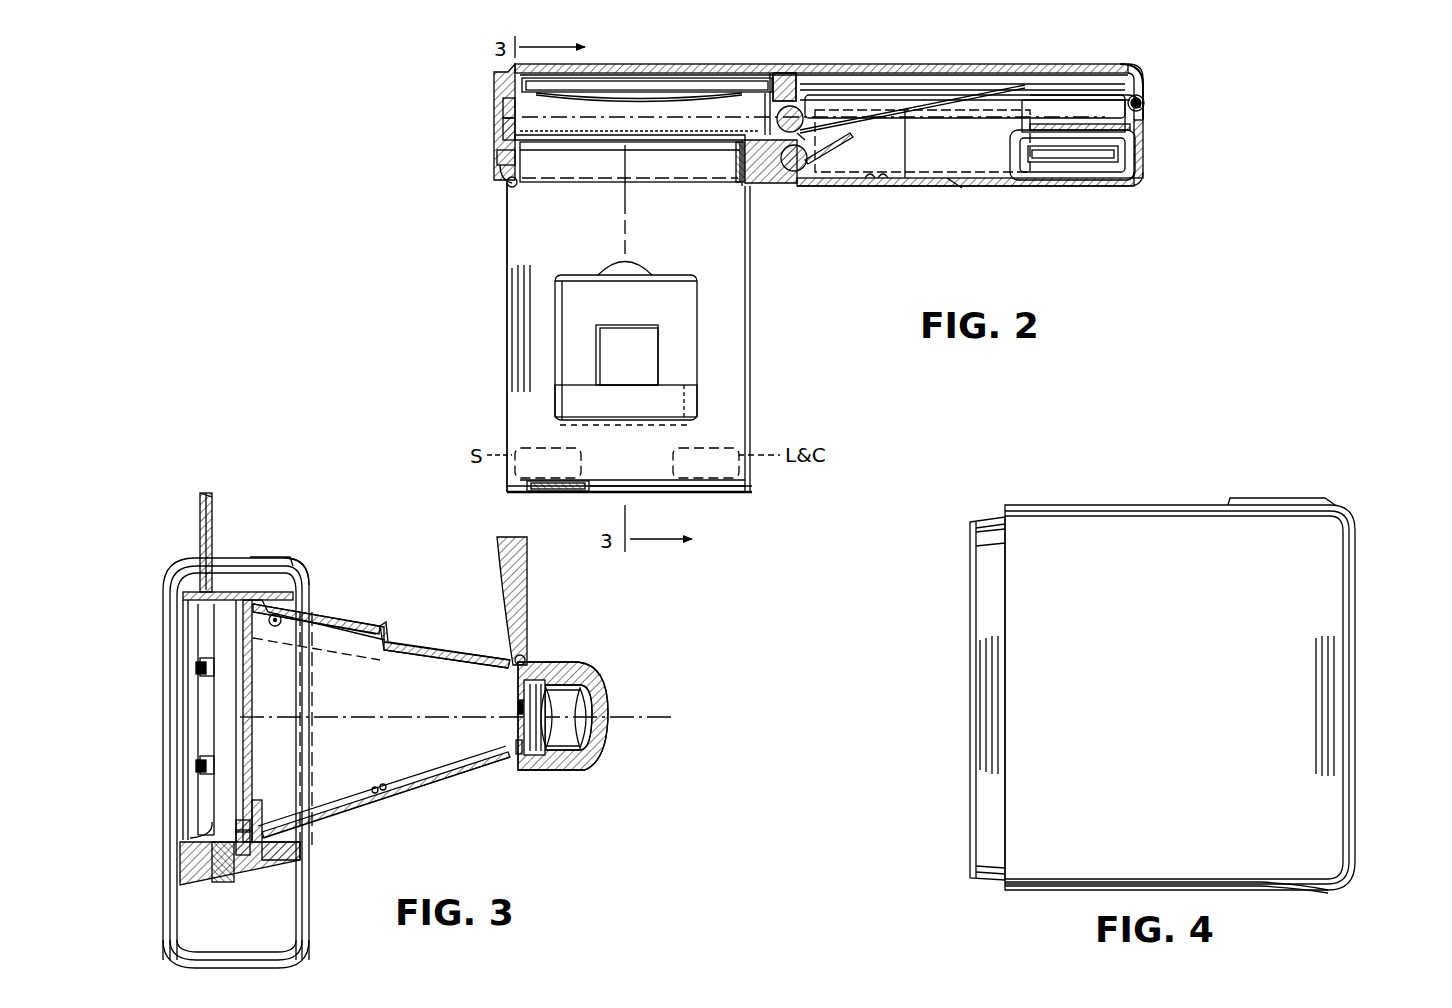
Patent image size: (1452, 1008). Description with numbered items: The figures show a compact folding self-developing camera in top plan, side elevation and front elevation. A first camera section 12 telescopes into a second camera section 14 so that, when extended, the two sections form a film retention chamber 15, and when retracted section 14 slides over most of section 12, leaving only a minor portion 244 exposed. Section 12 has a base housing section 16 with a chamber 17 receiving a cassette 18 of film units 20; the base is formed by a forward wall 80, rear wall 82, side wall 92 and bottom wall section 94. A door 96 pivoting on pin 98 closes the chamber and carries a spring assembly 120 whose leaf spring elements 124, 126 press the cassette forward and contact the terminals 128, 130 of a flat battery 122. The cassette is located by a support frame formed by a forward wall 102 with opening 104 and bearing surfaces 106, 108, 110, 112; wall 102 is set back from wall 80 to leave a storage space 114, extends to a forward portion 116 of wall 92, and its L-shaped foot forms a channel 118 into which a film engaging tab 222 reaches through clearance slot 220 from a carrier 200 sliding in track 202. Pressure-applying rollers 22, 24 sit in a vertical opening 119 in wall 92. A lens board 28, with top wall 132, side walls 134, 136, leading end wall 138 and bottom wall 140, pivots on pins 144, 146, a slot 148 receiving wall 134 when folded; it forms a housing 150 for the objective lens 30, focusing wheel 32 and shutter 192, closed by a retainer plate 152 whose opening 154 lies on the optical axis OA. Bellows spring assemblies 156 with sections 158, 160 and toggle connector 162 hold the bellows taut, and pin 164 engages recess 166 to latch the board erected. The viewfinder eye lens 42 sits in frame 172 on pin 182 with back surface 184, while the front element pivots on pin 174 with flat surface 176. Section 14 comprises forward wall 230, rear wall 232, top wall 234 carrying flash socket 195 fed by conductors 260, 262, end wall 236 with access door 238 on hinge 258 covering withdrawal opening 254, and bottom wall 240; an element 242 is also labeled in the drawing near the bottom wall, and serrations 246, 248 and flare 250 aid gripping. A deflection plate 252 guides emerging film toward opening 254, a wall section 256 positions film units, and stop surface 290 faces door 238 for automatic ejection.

In FIG. 2, the first camera section 12 is at (490, 233).
In FIG. 2, the second camera section 14 is at (952, 190).
In FIG. 2, the film retention and/or imbibition chamber 15 is at (942, 186).
In FIG. 2, the base housing section 16 is at (493, 74).
In FIG. 2, the chamber 17 is at (522, 98).
In FIG. 3, the chamber 17 is at (195, 598).
In FIG. 3, the cassette 18 is at (220, 690).
In FIG. 2, the self-developing film units 20 is at (1052, 72).
In FIG. 2, the pressure-applying roller 22 is at (800, 108).
In FIG. 2, the pressure-applying roller 24 is at (788, 172).
In FIG. 2, the lens board 28 is at (752, 492).
In FIG. 3, the objective lens 30 is at (568, 732).
In FIG. 2, the lens focusing wheel 32 is at (552, 492).
In FIG. 3, the rear or eye lens 42 is at (212, 520).
In FIG. 2, the forward wall 80 is at (873, 182).
In FIG. 2, the rear wall 82 is at (848, 70).
In FIG. 2, the side wall 92 is at (795, 72).
In FIG. 3, the side wall 92 is at (278, 918).
In FIG. 3, the bottom wall section 94 is at (180, 870).
In FIG. 2, the door 96 is at (717, 73).
In FIG. 2, the pin 98 is at (782, 72).
In FIG. 2, the forward wall 102 is at (728, 140).
In FIG. 2, the opening 104 is at (640, 135).
In FIG. 3, the portion of upper interior surface of bottom wall 106 is at (196, 832).
In FIG. 2, the interior surface portion of fixed side wall 108 is at (505, 108).
In FIG. 3, the underside surface portion of top wall 110 is at (236, 615).
In FIG. 2, the interior surface portion of side wall 112 is at (753, 110).
In FIG. 2, the space 114 is at (500, 163).
In FIG. 2, the forward portion of side wall 116 is at (765, 186).
In FIG. 3, the light sealed lateral channel 118 is at (262, 798).
In FIG. 2, the vertical opening 119 is at (808, 162).
In FIG. 2, the spring assembly 120 is at (580, 78).
In FIG. 2, the battery 122 is at (676, 92).
In FIG. 3, the leaf spring element 124 is at (206, 660).
In FIG. 3, the leaf spring element 126 is at (206, 758).
In FIG. 3, the battery terminal 128 is at (196, 668).
In FIG. 3, the battery terminal 130 is at (196, 766).
In FIG. 2, the top wall 132 is at (530, 247).
In FIG. 3, the top wall 132 is at (372, 630).
In FIG. 2, the left side wall 134 is at (506, 420).
In FIG. 2, the right side wall 136 is at (750, 342).
In FIG. 3, the right side wall 136 is at (340, 620).
In FIG. 2, the leading end wall 138 is at (700, 497).
In FIG. 3, the leading end wall 138 is at (608, 690).
In FIG. 3, the bottom wall 140 is at (540, 771).
In FIG. 2, the pivot pin 144 is at (518, 150).
In FIG. 2, the pivot pin 146 is at (740, 172).
In FIG. 2, the elongated vertical slot 148 is at (500, 122).
In FIG. 3, the component mounting housing 150 is at (578, 773).
In FIG. 3, the forward bellows retainer plate 152 is at (514, 748).
In FIG. 3, the central opening 154 is at (516, 708).
In FIG. 3, the folding leaf spring assemblies 156 is at (404, 792).
In FIG. 3, the forward section 158 is at (420, 778).
In FIG. 3, the rear section 160 is at (362, 800).
In FIG. 3, the over center pivoting toggle connector 162 is at (379, 703).
In FIG. 2, the pin 164 is at (500, 175).
In FIG. 2, the pin receiving recess 166 is at (508, 186).
In FIG. 3, the retaining frame 172 is at (202, 495).
In FIG. 3, the pivot pin 174 is at (525, 655).
In FIG. 3, the forward flat surface 176 is at (528, 568).
In FIG. 3, the pin 182 is at (222, 594).
In FIG. 3, the back surface 184 is at (200, 522).
In FIG. 3, the electronically operated shutter 192 is at (546, 676).
In FIG. 2, the flash unit socket 195 is at (1090, 168).
In FIG. 3, the sliding component carrier 200 is at (210, 838).
In FIG. 3, the guiding slide track 202 is at (212, 850).
In FIG. 3, the clearance slot 220 is at (285, 842).
In FIG. 3, the film engaging tab 222 is at (240, 820).
In FIG. 2, the forward wall 230 is at (968, 188).
In FIG. 2, the rear wall 232 is at (1128, 65).
In FIG. 4, the top wall 234 is at (1136, 505).
In FIG. 2, the side or end wall 236 is at (1145, 132).
In FIG. 4, the side or end wall 236 is at (1356, 823).
In FIG. 2, the access door 238 is at (1140, 72).
In FIG. 4, the bottom wall 240 is at (1268, 893).
In FIG. 2, the wall 242 is at (934, 212).
In FIG. 4, the minor portion 244 is at (990, 820).
In FIG. 4, the grooves or serrations 246 is at (982, 678).
In FIG. 4, the grooves or serrations 248 is at (1340, 662).
In FIG. 3, the flared end 250 is at (300, 575).
In FIG. 2, the inclined film deflection plate 252 is at (826, 136).
In FIG. 2, the film withdrawal opening 254 is at (1124, 70).
In FIG. 2, the short vertical wall section 256 is at (1060, 122).
In FIG. 2, the spring loaded hinge 258 is at (1146, 102).
In FIG. 2, the conductor or wire 260 is at (1005, 85).
In FIG. 2, the conductor or wire 262 is at (965, 114).
In FIG. 2, the vertical stop surface 290 is at (805, 94).
In FIG. 3, the optical axis OA is at (400, 715).